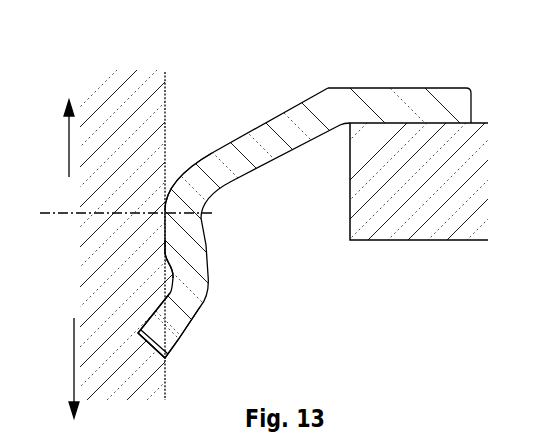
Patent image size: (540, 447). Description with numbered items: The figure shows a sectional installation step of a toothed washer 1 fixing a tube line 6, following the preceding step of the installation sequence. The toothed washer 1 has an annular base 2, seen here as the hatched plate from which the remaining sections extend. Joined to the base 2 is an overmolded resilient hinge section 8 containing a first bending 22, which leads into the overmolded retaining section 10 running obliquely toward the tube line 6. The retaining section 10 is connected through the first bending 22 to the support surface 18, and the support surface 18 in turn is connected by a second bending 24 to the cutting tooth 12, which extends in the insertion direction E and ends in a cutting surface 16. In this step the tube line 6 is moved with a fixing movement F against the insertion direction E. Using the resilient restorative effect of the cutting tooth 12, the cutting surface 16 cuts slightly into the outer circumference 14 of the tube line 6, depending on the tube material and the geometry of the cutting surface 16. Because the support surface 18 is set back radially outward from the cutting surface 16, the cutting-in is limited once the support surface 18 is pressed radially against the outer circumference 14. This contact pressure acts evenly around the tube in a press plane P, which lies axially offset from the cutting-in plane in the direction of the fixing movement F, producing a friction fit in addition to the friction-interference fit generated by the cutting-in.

The toothed washer 1 is at (402, 77).
The annular base 2 is at (410, 100).
The tube line 6 is at (100, 78).
The resilient hinge section 8 is at (399, 76).
The first bending 22 is at (328, 90).
The retaining section 10 is at (262, 128).
The cutting tooth 12 is at (167, 332).
The outer circumference 14 is at (166, 98).
The cutting surface 16 is at (158, 355).
The support surface 18 is at (163, 258).
The second bending 24 is at (180, 181).
The press plane P is at (66, 213).
The fixing movement F is at (60, 138).
The insertion direction E is at (65, 368).